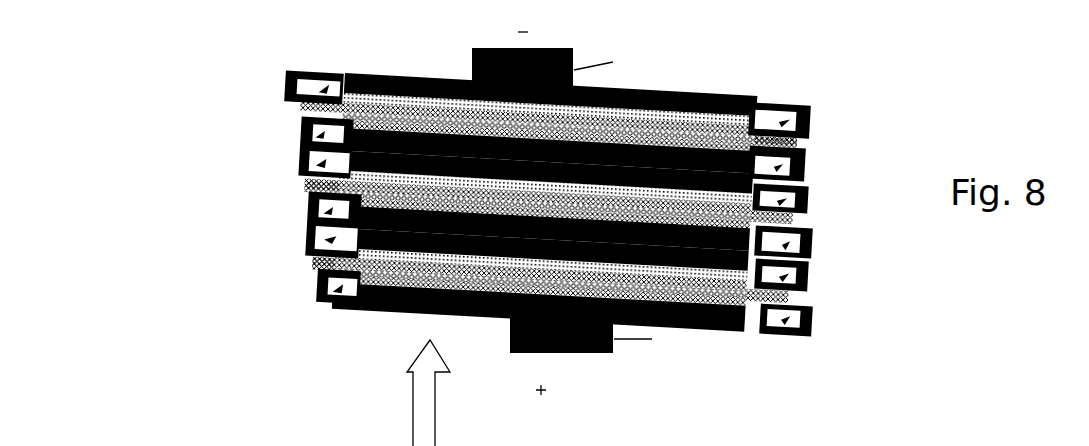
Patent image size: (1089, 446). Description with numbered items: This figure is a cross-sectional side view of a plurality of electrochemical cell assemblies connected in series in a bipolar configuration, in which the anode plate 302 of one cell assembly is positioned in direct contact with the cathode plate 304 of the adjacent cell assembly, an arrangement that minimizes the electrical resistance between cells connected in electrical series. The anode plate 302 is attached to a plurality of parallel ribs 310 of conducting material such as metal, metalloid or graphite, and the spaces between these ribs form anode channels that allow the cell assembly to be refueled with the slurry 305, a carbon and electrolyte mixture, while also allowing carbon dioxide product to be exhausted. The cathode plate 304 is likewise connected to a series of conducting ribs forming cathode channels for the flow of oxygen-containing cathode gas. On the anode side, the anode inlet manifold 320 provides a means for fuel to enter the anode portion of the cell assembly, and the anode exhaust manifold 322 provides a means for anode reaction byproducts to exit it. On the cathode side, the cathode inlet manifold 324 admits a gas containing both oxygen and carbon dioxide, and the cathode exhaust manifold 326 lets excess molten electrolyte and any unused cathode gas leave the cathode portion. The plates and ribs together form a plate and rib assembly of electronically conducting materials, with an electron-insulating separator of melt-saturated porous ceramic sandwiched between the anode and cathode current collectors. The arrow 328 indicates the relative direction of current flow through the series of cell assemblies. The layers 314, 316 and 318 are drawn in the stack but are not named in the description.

The anode plate 302 is at (370, 73).
The cathode plate 304 is at (808, 135).
The slurry 305 is at (432, 79).
The parallel ribs 310 is at (337, 73).
The electrolyte layer 314 is at (693, 96).
The separator layer 316 is at (728, 100).
The electrode layer 318 is at (403, 78).
The anode inlet manifold 320 is at (313, 220).
The anode exhaust manifold 322 is at (815, 287).
The cathode inlet manifold 324 is at (320, 283).
The cathode exhaust manifold 326 is at (805, 245).
The arrow 328 is at (437, 405).